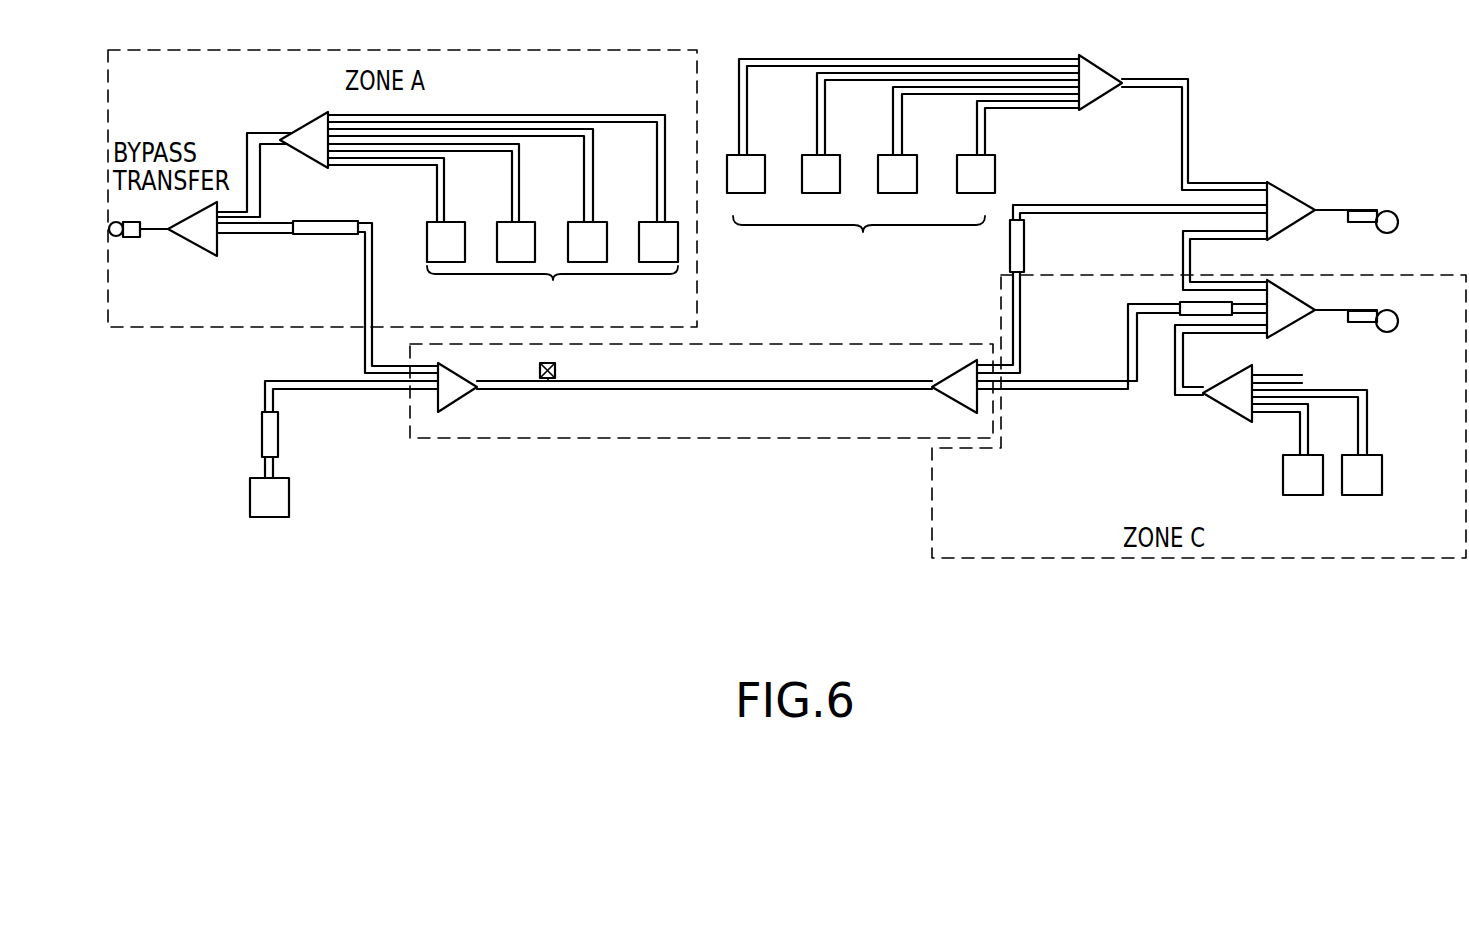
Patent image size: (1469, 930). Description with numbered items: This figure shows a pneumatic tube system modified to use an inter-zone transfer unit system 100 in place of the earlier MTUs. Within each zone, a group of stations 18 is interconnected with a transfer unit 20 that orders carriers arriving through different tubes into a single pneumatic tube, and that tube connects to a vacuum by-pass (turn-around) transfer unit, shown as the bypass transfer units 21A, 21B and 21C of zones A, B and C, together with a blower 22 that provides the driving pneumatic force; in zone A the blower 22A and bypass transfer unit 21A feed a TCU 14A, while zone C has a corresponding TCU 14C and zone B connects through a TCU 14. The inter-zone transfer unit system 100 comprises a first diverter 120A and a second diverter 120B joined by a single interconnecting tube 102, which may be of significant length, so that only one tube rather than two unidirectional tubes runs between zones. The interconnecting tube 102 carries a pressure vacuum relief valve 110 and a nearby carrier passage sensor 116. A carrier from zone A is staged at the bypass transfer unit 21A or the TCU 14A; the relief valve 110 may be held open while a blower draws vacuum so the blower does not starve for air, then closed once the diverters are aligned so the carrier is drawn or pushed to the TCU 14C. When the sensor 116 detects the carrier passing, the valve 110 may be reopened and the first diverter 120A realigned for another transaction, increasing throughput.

The TCU 14 is at (1009, 250).
The TCU 14A is at (328, 220).
The TCU 14C is at (1178, 317).
The station 18 is at (1410, 477).
The transfer unit 20 is at (300, 125).
The bypass transfer unit 21A is at (206, 249).
The bypass transfer unit 21B is at (1289, 195).
The bypass transfer unit 21C is at (1295, 297).
The blower 22 is at (1383, 211).
The blower 22A is at (116, 237).
The inter-zone transfer unit system 100 is at (596, 440).
The interconnecting tube 102 is at (712, 391).
The pressure vacuum relief valve 110 is at (556, 369).
The carrier passage sensor 116 is at (545, 391).
The first diverter 120A is at (450, 408).
The second diverter 120B is at (957, 371).